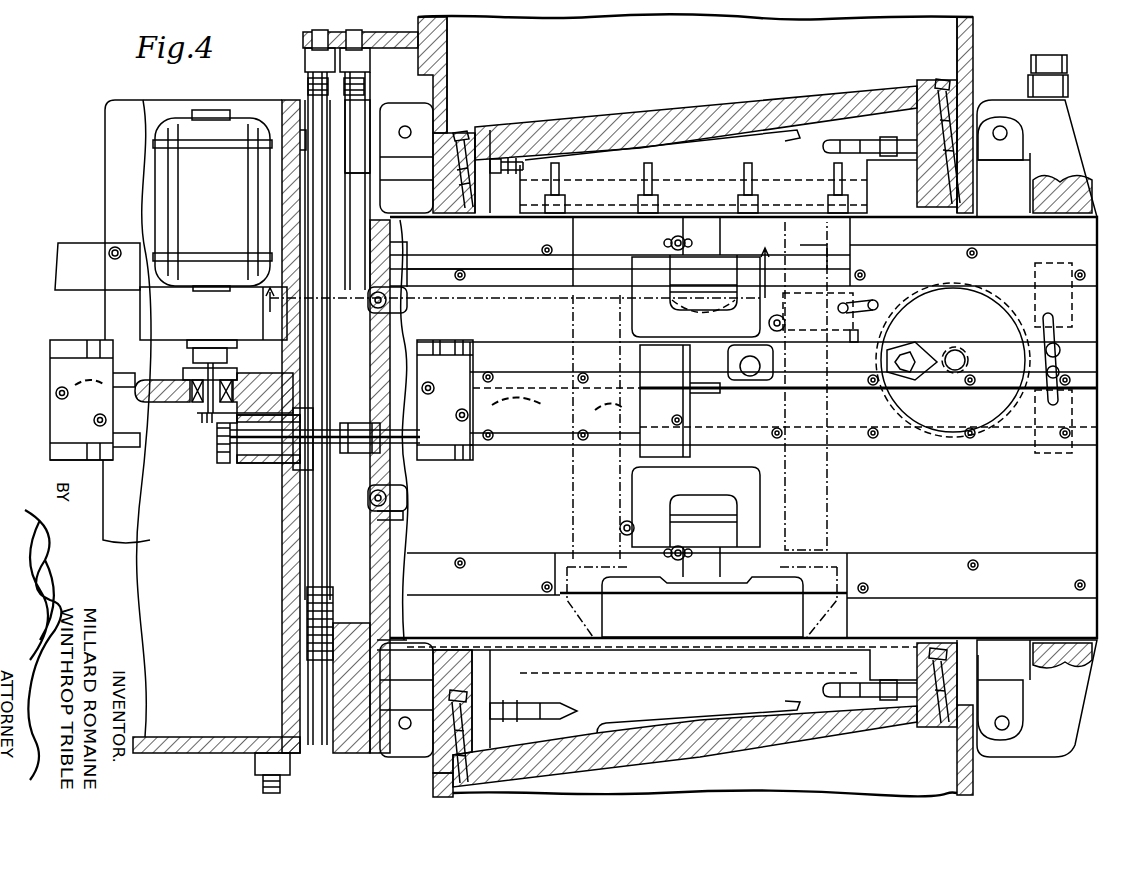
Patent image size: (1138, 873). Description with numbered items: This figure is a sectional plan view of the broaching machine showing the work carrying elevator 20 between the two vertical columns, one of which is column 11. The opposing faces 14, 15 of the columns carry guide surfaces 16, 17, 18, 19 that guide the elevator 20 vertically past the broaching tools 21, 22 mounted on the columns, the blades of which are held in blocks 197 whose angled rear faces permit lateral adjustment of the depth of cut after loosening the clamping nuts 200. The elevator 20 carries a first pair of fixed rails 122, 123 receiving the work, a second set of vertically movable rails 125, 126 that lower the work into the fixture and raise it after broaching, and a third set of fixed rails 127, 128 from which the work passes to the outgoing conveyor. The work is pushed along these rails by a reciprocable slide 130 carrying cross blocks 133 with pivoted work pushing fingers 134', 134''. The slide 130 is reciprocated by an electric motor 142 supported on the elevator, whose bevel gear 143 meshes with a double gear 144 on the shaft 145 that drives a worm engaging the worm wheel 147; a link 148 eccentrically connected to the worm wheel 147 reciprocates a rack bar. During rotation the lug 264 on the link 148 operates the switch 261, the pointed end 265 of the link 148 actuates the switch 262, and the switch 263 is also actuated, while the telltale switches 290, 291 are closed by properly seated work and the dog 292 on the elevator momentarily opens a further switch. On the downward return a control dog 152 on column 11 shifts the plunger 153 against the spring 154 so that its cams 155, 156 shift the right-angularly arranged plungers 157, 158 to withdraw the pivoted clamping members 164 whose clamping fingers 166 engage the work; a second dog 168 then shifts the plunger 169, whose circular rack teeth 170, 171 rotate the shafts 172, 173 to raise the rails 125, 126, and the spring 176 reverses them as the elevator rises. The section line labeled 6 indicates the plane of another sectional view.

The vertical column 11 is at (448, 56).
The opposing face 14 is at (845, 726).
The opposing face 15 is at (815, 122).
The guide surface 16 is at (402, 678).
The guide surface 17 is at (1015, 690).
The guide surface 18 is at (450, 120).
The guide surface 19 is at (1010, 152).
The work carrying elevator 20 is at (1088, 502).
The broaching tools 21 is at (753, 665).
The broaching tools 22 is at (687, 195).
The section line 6- 6 is at (546, 390).
The fixed rail 122 is at (1087, 277).
The fixed rail 123 is at (1087, 584).
The vertically movable rail 125 is at (840, 262).
The vertically movable rail 126 is at (852, 590).
The fixed rail 127 is at (500, 284).
The fixed rail 128 is at (507, 567).
The reciprocable slide 130 is at (538, 426).
The cross block 133 is at (471, 368).
The work pushing finger 134' is at (452, 334).
The work pushing finger 134'' is at (77, 469).
The electric motor 142 is at (185, 198).
The bevel gear 143 is at (200, 416).
The double gear 144 is at (222, 450).
The shaft 145 is at (272, 442).
The worm wheel 147 is at (990, 416).
The link 148 is at (838, 380).
The control dog 152 is at (366, 56).
The plunger 153 is at (357, 118).
The spring 154 is at (382, 193).
The cam 155 is at (408, 289).
The cam 156 is at (400, 520).
The plunger 157 is at (392, 290).
The plunger 158 is at (394, 497).
The pivoted clamping member 164 is at (668, 300).
The clamping finger 166 is at (662, 247).
The dog 168 is at (309, 50).
The plunger 169 is at (307, 108).
The circular rack teeth 170 is at (310, 314).
The circular rack teeth 171 is at (307, 637).
The shaft 172 is at (396, 284).
The shaft 173 is at (406, 560).
The spring 176 is at (306, 136).
The blade block 197 is at (800, 128).
The clamping nut 200 is at (514, 158).
The switch 261 is at (852, 297).
The switch 262 is at (1075, 312).
The switch 263 is at (1075, 418).
The lug 264 is at (866, 313).
The pointed end 265 is at (925, 353).
The telltale switch 290 is at (622, 527).
The telltale switch 291 is at (780, 328).
The dog 292 is at (255, 763).